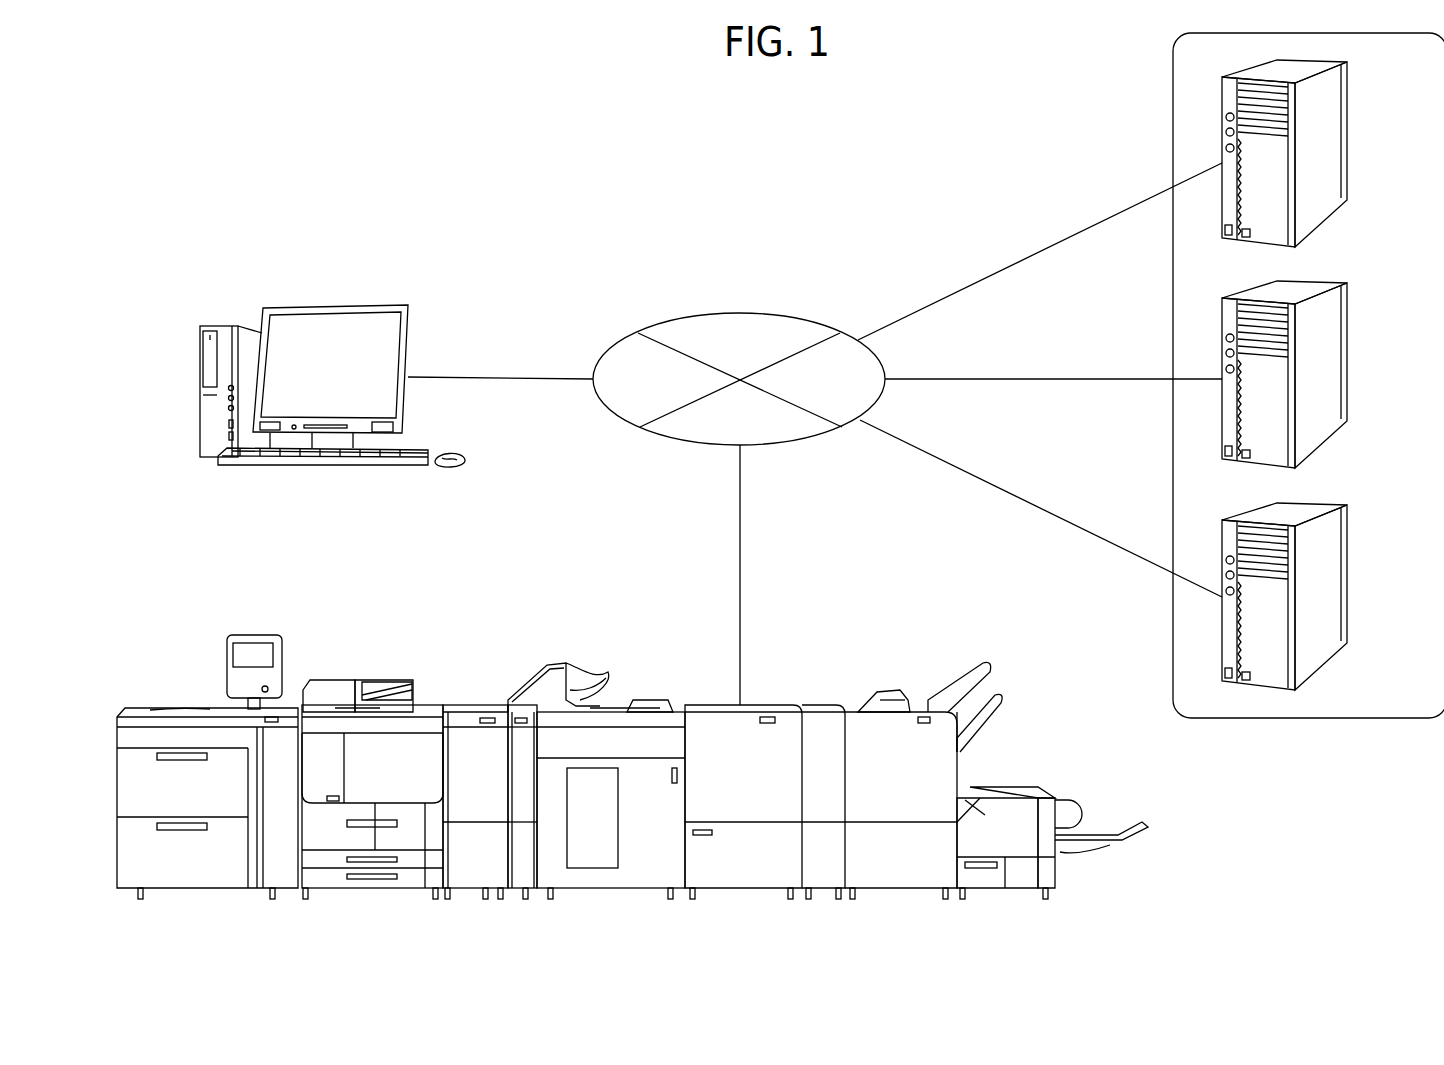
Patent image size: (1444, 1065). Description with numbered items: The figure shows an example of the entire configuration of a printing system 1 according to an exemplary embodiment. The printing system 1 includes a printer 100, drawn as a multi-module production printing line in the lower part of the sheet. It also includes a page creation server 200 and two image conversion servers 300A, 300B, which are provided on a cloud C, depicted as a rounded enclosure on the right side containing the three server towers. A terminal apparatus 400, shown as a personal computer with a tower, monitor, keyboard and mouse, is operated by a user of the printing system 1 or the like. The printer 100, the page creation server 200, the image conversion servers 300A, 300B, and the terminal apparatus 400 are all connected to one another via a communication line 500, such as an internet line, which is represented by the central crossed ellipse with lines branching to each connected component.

The printing system 1 is at (262, 132).
The printer 100 is at (170, 705).
The page creation server 200 is at (1348, 130).
The image conversion server 300A is at (1348, 350).
The image conversion server 300B is at (1348, 571).
The terminal apparatus 400 is at (336, 305).
The communication line 500 is at (742, 312).
The cloud C is at (1172, 95).